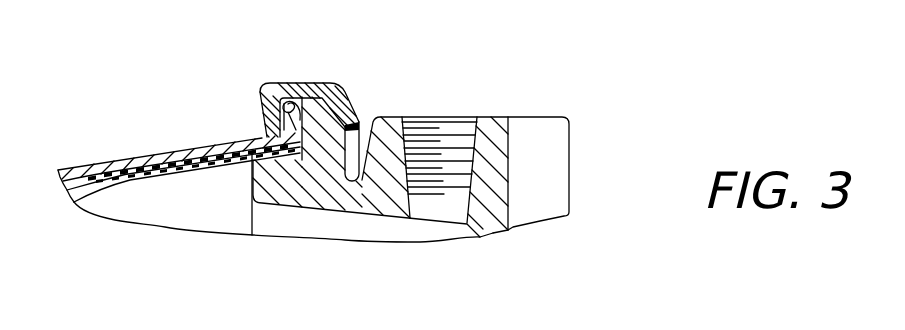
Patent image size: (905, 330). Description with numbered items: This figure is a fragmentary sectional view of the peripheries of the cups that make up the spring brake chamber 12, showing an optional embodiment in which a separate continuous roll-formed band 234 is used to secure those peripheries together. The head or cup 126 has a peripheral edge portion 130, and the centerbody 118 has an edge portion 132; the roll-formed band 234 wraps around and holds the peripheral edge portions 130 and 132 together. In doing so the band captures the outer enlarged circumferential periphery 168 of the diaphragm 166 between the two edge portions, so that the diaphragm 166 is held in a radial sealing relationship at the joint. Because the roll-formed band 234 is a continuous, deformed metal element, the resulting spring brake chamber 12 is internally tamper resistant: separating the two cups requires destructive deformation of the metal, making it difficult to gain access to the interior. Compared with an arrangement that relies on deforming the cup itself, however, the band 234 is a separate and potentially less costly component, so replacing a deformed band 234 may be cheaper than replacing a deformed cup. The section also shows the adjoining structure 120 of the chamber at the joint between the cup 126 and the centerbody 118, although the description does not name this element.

The spring brake chamber 12 is at (126, 147).
The cup 126 is at (78, 165).
The peripheral edge portion 130 is at (268, 114).
The roll-formed band 234 is at (303, 100).
The edge portion 132 is at (326, 118).
The centerbody 118 is at (490, 105).
The diaphragm 166 is at (124, 181).
The outer circumferential periphery 168 is at (293, 178).
The base / support 120 is at (365, 228).